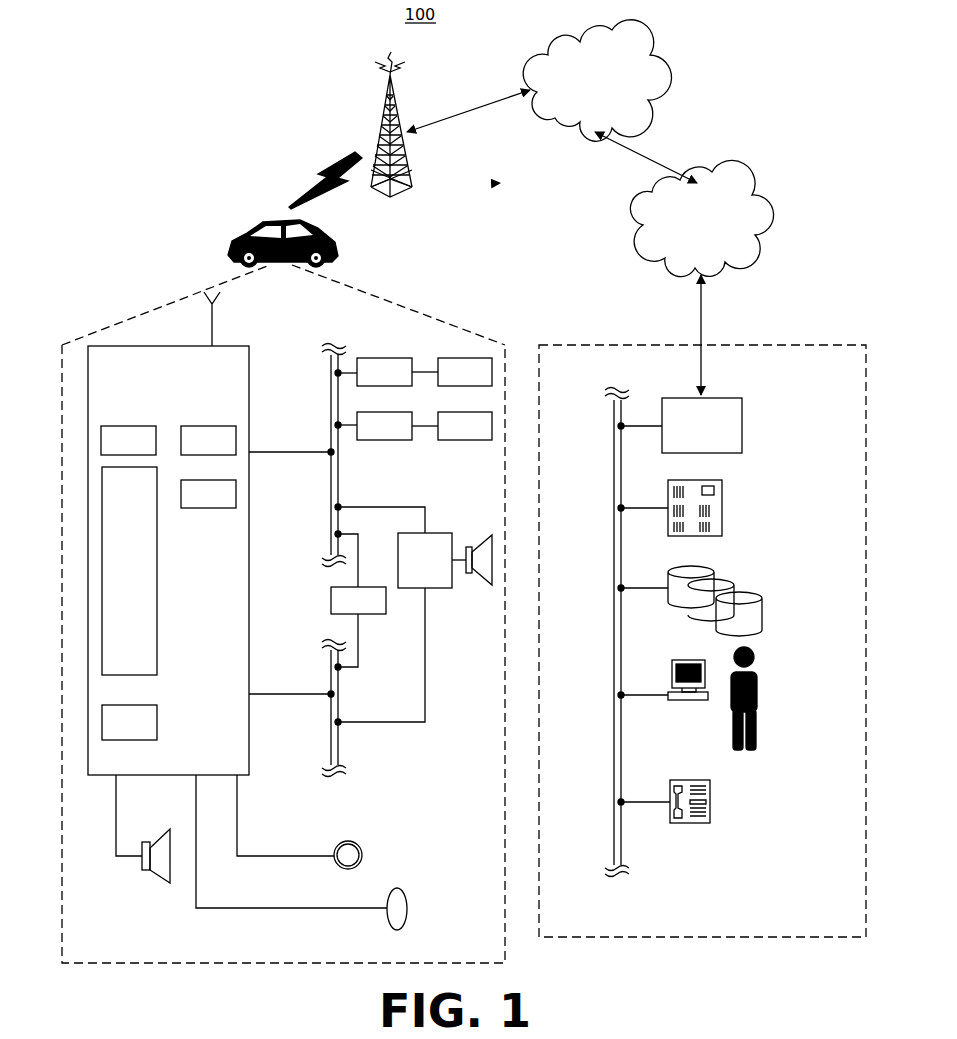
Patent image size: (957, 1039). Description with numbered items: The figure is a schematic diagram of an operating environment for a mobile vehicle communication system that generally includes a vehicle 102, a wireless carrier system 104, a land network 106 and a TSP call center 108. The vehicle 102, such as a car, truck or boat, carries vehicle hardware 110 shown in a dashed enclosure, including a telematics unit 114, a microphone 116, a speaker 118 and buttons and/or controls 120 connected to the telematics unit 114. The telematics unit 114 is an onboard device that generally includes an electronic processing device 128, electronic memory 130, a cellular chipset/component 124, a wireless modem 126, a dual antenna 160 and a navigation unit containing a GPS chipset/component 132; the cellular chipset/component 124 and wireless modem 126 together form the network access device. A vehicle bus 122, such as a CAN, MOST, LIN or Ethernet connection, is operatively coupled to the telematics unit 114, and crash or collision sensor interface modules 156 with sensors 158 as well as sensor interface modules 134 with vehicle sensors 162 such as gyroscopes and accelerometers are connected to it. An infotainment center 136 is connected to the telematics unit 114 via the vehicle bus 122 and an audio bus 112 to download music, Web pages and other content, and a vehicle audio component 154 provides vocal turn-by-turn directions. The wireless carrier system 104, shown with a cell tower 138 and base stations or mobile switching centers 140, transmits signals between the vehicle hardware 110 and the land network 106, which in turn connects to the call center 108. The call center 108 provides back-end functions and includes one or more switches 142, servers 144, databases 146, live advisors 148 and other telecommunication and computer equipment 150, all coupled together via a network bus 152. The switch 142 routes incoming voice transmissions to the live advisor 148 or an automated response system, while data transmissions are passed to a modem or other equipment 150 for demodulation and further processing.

The vehicle 102 is at (252, 236).
The wireless carrier system 104 is at (500, 183).
The land network 106 is at (701, 218).
The TSP call center 108 is at (702, 938).
The vehicle hardware 110 is at (250, 964).
The audio bus 112 is at (331, 742).
The telematics unit 114 is at (249, 632).
The microphone 116 is at (400, 888).
The speaker 118 is at (152, 876).
The buttons and/or controls 120 is at (348, 841).
The vehicle bus 122 is at (338, 495).
The cellular chipset/component 124 is at (128, 440).
The wireless modem 126 is at (208, 440).
The electronic processing device 128 is at (129, 571).
The electronic memory 130 is at (129, 722).
The GPS chipset/component 132 is at (208, 494).
The sensor interface modules 134 is at (384, 426).
The infotainment center 136 is at (358, 600).
The cell towers 138 is at (396, 97).
The base stations and/or mobile switching centers 140 is at (597, 80).
The switches 142 is at (702, 425).
The servers 144 is at (722, 497).
The databases 146 is at (762, 612).
The live advisors 148 is at (756, 662).
The telecommunication and computer equipment 150 is at (710, 796).
The network connection or bus 152 is at (614, 635).
The vehicle audio component 154 is at (445, 560).
The crash and/or collision sensor interface modules 156 is at (384, 372).
The sensors 158 is at (465, 372).
The dual antenna 160 is at (214, 340).
The vehicle sensors 162 is at (465, 426).